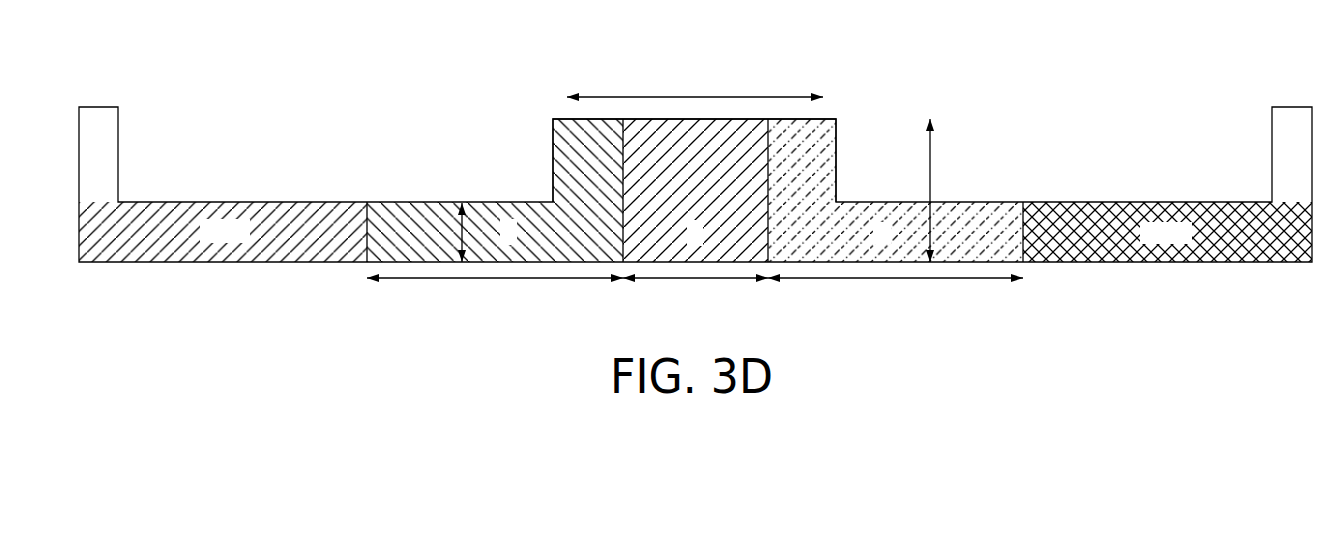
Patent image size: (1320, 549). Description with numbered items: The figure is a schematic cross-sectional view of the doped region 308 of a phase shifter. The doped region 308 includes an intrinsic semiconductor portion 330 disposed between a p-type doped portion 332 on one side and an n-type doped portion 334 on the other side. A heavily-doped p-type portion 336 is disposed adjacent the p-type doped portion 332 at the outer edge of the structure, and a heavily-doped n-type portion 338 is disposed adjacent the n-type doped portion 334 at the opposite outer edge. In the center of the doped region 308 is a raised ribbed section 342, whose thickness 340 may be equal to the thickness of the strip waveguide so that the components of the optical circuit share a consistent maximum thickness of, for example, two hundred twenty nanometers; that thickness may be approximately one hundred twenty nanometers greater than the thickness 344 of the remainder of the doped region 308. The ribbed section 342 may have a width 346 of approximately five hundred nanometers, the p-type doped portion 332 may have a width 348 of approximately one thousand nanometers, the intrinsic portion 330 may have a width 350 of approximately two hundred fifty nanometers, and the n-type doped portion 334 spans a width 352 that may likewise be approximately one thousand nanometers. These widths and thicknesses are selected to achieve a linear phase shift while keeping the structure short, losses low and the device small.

The doped region 308 is at (95, 62).
The intrinsic semiconductor portion 330 is at (747, 145).
The p-type doped portion 332 is at (552, 137).
The n-type doped portion 334 is at (828, 138).
The heavily-doped p-type portion 336 is at (275, 202).
The heavily-doped n-type portion 338 is at (1136, 210).
The thickness of the ribbed section 340 is at (930, 153).
The ribbed section 342 is at (836, 105).
The thickness of the remainder of the doped region 344 is at (463, 220).
The width of the ribbed section 346 is at (680, 97).
The width of the p-type doped portion 348 is at (495, 280).
The width of the intrinsic portion 350 is at (696, 280).
The n region width 352 is at (896, 280).